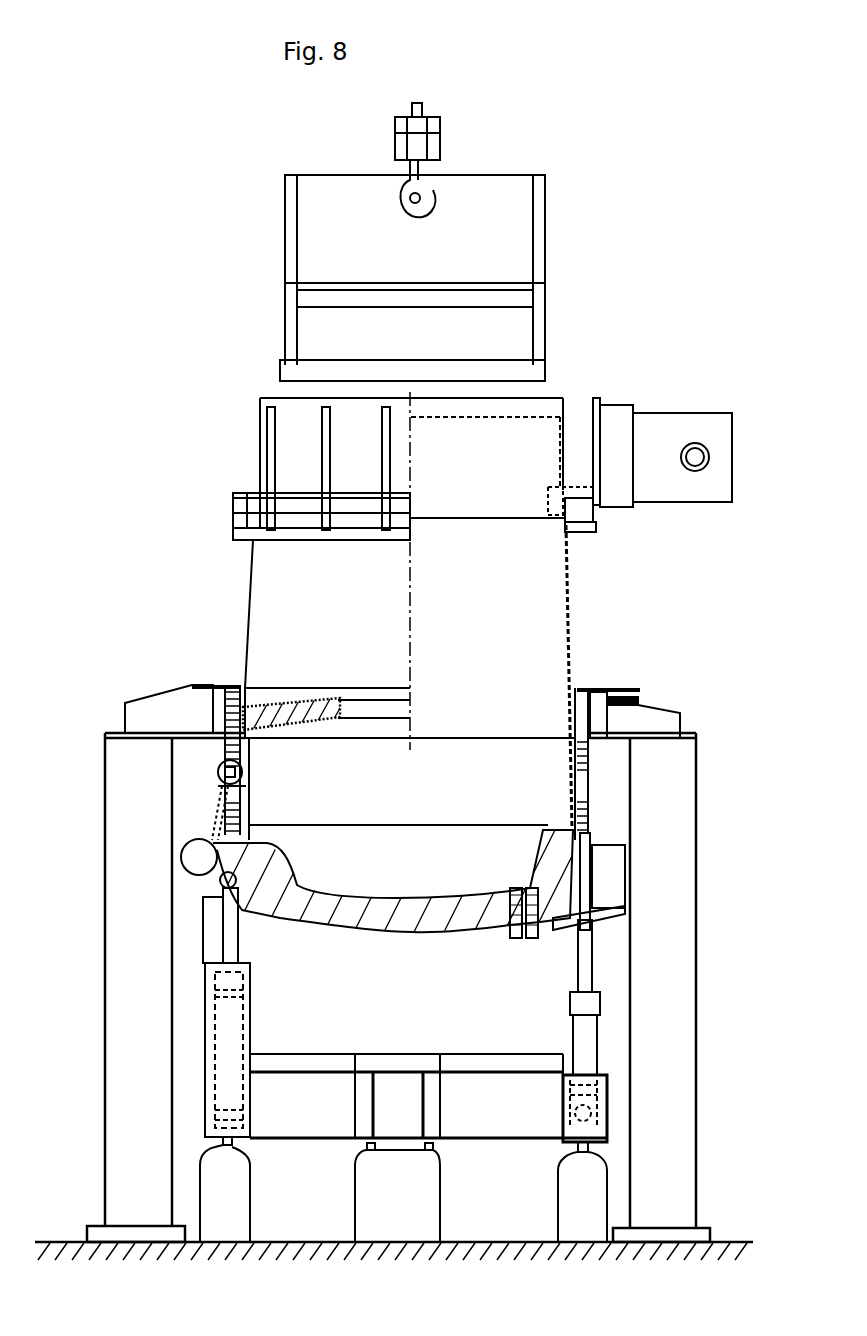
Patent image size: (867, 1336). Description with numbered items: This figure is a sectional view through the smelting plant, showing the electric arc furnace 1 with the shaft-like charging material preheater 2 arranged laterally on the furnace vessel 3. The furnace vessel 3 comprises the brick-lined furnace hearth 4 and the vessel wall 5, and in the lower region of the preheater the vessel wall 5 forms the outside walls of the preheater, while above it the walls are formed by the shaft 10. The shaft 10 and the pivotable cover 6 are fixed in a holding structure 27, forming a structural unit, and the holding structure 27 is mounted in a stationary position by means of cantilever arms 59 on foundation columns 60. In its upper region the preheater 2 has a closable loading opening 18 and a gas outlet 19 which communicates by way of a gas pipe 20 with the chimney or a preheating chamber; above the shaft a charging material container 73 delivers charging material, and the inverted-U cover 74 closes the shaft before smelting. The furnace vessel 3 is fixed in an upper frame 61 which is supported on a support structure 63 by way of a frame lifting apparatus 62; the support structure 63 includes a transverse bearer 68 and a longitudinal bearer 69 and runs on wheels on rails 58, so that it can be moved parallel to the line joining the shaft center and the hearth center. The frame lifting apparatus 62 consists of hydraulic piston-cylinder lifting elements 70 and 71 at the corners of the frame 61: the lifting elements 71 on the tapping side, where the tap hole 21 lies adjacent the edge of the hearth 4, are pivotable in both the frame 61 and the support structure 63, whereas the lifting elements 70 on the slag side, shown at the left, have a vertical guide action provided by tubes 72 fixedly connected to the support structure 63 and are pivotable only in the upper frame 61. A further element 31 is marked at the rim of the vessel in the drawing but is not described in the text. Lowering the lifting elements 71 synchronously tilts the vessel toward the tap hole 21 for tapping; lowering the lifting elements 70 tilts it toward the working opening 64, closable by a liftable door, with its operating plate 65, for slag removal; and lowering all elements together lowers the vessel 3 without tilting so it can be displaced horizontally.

The electric arc furnace 1 is at (668, 694).
The charging material preheater 2 is at (238, 566).
The furnace vessel 3 is at (205, 772).
The furnace hearth 4 is at (380, 905).
The vessel wall 5 is at (577, 792).
The cover 6 is at (305, 700).
The shaft 10 is at (260, 600).
The loading opening 18 is at (503, 523).
The gas outlet 19 is at (577, 430).
The gas pipe 20 is at (700, 485).
The tap hole 21 is at (520, 940).
The holding structure 27 is at (222, 705).
The ladle lip 31 is at (548, 826).
The rails 58 is at (235, 1152).
The cantilever arms 59 is at (157, 712).
The foundation columns 60 is at (117, 1135).
The upper frame 61 is at (205, 930).
The frame lifting apparatus 62 is at (192, 1088).
The support structure 63 is at (330, 1066).
The working opening 64 is at (218, 815).
The operating plate 65 is at (185, 857).
The transverse bearer 68 is at (482, 1093).
The longitudinal bearer 69 is at (395, 1087).
The lifting elements 70 is at (235, 1030).
The lifting elements 71 is at (602, 1003).
The tubes 72 is at (210, 1042).
The charging material container 73 is at (518, 243).
The cover 74 is at (285, 438).